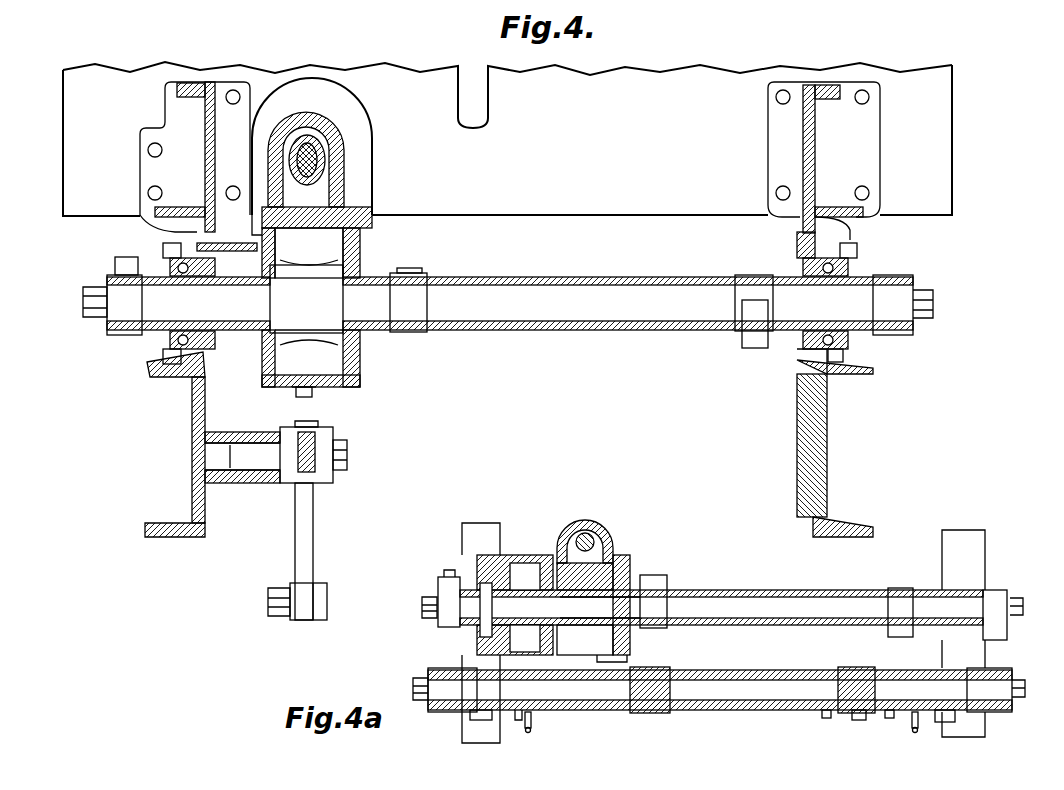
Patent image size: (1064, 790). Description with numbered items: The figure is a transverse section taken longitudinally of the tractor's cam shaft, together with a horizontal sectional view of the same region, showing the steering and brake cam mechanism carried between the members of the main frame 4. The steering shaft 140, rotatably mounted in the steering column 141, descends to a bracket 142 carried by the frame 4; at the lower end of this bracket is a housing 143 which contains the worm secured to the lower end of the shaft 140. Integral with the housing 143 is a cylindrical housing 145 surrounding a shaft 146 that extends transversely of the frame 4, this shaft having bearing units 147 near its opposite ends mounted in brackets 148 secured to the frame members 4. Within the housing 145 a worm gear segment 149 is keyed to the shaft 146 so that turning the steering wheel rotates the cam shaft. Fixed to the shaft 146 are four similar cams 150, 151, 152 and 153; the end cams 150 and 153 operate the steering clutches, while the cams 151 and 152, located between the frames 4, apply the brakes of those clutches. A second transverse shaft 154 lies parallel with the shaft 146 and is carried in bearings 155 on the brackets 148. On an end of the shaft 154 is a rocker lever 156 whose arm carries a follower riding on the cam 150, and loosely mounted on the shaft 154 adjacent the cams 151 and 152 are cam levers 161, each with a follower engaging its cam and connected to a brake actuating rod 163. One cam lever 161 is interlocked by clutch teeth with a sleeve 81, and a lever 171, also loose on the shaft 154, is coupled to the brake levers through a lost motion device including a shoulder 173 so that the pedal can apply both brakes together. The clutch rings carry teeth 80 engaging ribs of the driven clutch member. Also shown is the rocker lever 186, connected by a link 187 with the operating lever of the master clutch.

In FIG. 4, the main frame 4 is at (185, 380).
In FIG. 4A, the main frame 4 is at (481, 535).
In FIG. 4A, the teeth 80 is at (518, 722).
In FIG. 4A, the sleeve 81 is at (738, 670).
In FIG. 4, the shaft 140 is at (325, 160).
In FIG. 4A, the shaft 140 is at (590, 528).
In FIG. 4, the steering column 141 is at (320, 240).
In FIG. 4A, the bracket 142 is at (560, 560).
In FIG. 4, the housing 143 is at (323, 103).
In FIG. 4, the cylindrical housing 145 is at (320, 390).
In FIG. 4A, the cylindrical housing 145 is at (628, 660).
In FIG. 4, the shaft 146 is at (370, 292).
In FIG. 4A, the shaft 146 is at (630, 607).
In FIG. 4, the bearing units 147 is at (871, 262).
In FIG. 4A, the bearing units 147 is at (721, 607).
In FIG. 4, the brackets 148 is at (205, 165).
In FIG. 4, the worm gear segment 149 is at (340, 340).
In FIG. 4A, the worm gear segment 149 is at (620, 558).
In FIG. 4, the cam 150 is at (116, 262).
In FIG. 4A, the cam 150 is at (447, 578).
In FIG. 4, the cam 151 is at (420, 269).
In FIG. 4A, the cam 151 is at (658, 583).
In FIG. 4, the cam 152 is at (755, 345).
In FIG. 4A, the cam 152 is at (895, 588).
In FIG. 4, the cam 153 is at (905, 282).
In FIG. 4A, the cam 153 is at (995, 590).
In FIG. 4A, the second transverse shaft 154 is at (745, 710).
In FIG. 4A, the bearings 155 is at (480, 713).
In FIG. 4A, the rocker lever 156 is at (440, 668).
In FIG. 4A, the cam levers 161 is at (652, 713).
In FIG. 4A, the brake actuating rod 163 is at (533, 726).
In FIG. 4A, the lever 171 is at (857, 722).
In FIG. 4A, the shoulder 173 is at (826, 718).
In FIG. 4, the rocker lever 186 is at (312, 500).
In FIG. 4, the link 187 is at (292, 616).